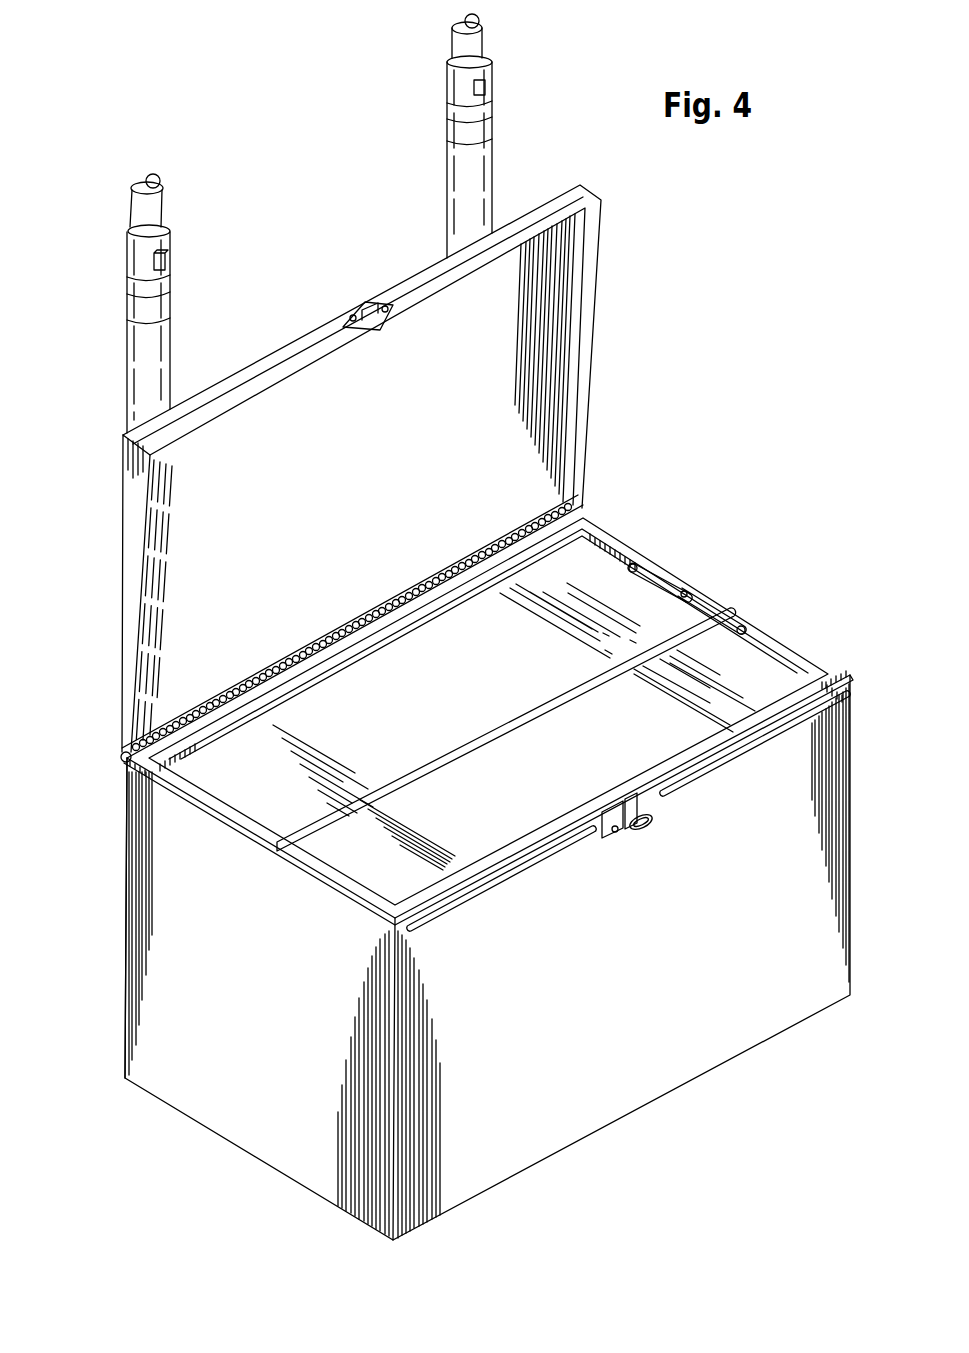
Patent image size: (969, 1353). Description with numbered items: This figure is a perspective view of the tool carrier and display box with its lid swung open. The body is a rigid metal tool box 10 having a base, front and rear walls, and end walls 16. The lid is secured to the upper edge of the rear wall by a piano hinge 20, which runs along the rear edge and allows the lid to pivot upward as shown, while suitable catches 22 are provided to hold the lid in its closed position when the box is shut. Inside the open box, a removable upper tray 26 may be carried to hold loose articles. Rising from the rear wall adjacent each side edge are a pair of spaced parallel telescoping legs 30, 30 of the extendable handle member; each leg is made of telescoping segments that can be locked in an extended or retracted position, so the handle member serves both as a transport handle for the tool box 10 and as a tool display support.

The tool box 10 is at (852, 785).
The end walls 16 is at (167, 890).
The piano hinge 20 is at (130, 508).
The catches 22 is at (126, 760).
The removable upper tray 26 is at (593, 557).
The telescoping legs 30 is at (455, 172).